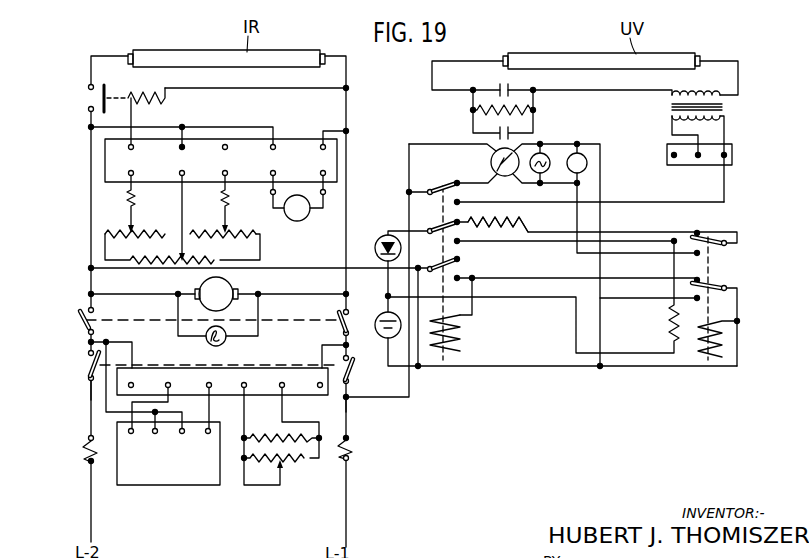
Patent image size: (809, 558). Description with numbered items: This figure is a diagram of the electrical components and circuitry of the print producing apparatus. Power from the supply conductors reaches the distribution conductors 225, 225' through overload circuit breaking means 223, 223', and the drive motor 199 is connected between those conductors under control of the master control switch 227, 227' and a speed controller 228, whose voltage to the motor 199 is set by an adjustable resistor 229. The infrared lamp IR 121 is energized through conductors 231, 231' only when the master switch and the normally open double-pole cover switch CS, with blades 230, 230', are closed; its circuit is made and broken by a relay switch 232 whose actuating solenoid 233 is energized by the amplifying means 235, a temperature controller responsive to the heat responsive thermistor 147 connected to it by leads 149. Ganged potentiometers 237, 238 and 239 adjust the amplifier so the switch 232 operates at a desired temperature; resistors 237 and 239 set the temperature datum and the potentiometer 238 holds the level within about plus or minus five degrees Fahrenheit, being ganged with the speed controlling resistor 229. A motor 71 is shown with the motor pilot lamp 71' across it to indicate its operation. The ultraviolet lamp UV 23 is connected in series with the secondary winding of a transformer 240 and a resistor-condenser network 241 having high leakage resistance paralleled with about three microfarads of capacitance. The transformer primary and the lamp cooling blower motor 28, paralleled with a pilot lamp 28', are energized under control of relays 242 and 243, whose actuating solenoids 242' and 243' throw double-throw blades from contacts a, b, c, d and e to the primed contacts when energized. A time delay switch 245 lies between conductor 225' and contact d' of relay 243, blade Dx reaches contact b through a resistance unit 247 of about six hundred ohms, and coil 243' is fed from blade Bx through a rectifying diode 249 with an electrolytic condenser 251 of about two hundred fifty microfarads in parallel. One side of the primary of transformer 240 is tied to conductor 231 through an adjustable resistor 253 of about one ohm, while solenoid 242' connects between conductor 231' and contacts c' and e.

The infra-red lamp 121 is at (130, 50).
The ultra-violet lamp 23 is at (506, 56).
The power conductor 231 is at (236, 299).
The power supply conductor 231' is at (279, 301).
The relay switch 232 is at (100, 99).
The actuating solenoid 233 is at (166, 108).
The amplifying means 235 is at (294, 141).
The potentiometer 237 is at (150, 229).
The temperature regulating potentiometer 238 is at (148, 254).
The potentiometer 239 is at (203, 230).
The leads 149 is at (270, 192).
The heat responsive thermistor 147 is at (302, 219).
The motor 71 is at (218, 294).
The motor pilot lamp 71' is at (218, 329).
The switch blade 230 is at (63, 313).
The switch blade 230' is at (316, 316).
The master control switch 227 is at (108, 384).
The switch 227' is at (377, 270).
The distribution conductor 225 is at (64, 395).
The distribution conductor 225' is at (369, 411).
The overload circuit breaking means 223 is at (68, 453).
The circuit breaker 223' is at (373, 449).
The speed controller 228 is at (292, 368).
The drive motor 199 is at (203, 477).
The adjustable resistor 229 is at (280, 487).
The resistor-condenser network 241 is at (464, 110).
The transformer 240 is at (725, 105).
The relay 242 is at (572, 256).
The switch actuating solenoid 242' is at (464, 358).
The time delay switch 245 is at (502, 177).
The resistance unit 247 is at (503, 233).
The lamp cooling blower motor 28 is at (632, 187).
The pilot lamp 28' is at (561, 151).
The rectifying diode 249 is at (378, 244).
The electrolytic condenser 251 is at (378, 313).
The relay 243 is at (685, 281).
The relay actuating coil 243' is at (726, 360).
The adjustable resistor 253 is at (664, 317).